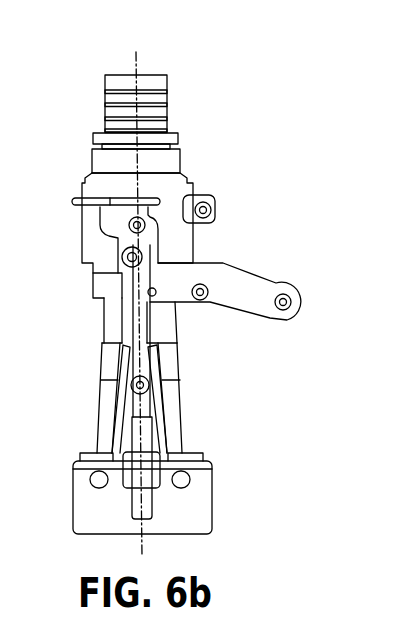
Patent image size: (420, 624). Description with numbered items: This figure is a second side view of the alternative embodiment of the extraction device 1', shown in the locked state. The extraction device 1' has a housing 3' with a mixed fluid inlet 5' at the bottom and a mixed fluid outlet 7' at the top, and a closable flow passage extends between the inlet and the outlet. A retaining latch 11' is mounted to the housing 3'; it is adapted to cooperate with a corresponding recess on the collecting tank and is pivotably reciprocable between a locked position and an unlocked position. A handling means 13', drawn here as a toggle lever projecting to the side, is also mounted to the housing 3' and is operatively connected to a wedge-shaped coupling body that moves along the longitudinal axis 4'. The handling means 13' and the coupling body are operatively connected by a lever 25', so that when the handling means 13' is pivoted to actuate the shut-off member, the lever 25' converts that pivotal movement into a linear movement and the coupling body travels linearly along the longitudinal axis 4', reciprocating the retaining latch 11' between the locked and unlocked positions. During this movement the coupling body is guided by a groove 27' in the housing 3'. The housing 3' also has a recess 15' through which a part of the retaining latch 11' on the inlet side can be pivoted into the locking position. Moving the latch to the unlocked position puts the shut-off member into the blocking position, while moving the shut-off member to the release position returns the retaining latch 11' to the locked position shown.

The extraction device 1' is at (188, 169).
The housing 3' is at (116, 497).
The longitudinal axis 4' is at (155, 283).
The mixed fluid inlet 5' is at (178, 515).
The mixed fluid outlet 7' is at (110, 73).
The retaining latch 11' is at (180, 447).
The handling means 13' is at (239, 326).
The recess 15' is at (105, 401).
The lever 25' is at (182, 331).
The groove 27' is at (88, 421).